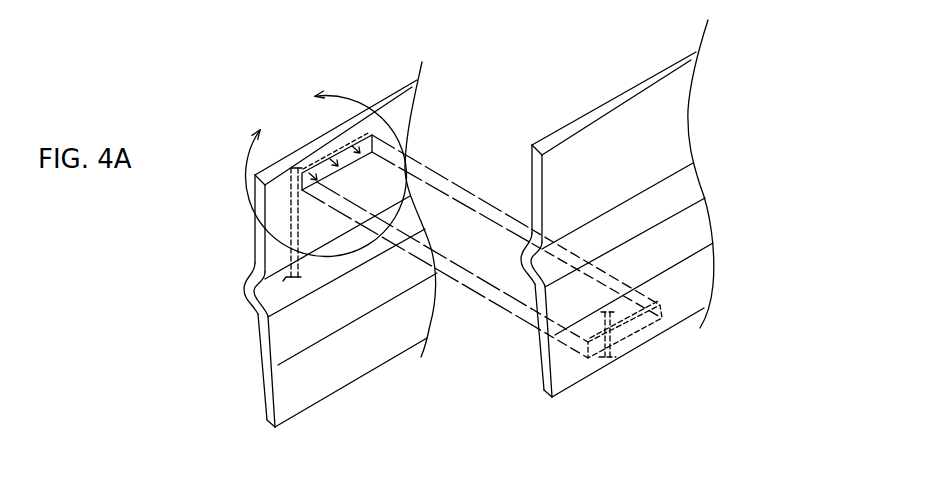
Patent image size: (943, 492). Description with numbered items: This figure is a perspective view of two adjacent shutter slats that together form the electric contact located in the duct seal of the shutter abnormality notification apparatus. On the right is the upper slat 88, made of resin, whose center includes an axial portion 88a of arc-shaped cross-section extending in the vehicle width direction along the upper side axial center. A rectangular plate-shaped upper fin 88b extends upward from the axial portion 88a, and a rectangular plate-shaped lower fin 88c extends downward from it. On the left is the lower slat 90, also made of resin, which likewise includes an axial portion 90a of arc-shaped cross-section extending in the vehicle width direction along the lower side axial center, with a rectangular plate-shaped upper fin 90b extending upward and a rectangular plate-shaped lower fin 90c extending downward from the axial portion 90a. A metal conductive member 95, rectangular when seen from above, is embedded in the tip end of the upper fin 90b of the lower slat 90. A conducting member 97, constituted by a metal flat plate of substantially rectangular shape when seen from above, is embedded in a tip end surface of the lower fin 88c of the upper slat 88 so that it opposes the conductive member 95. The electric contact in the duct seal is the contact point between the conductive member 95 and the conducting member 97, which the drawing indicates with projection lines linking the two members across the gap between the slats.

The upper slat 88 is at (590, 90).
The axial portion 88a is at (695, 185).
The upper fin 88b is at (532, 167).
The lower fin 88c is at (706, 278).
The lower slat 90 is at (228, 346).
The axial portion 90a is at (244, 287).
The upper fin 90b is at (253, 230).
The lower fin 90c is at (264, 393).
The conductive member 95 is at (358, 160).
The conducting member 97 is at (628, 334).